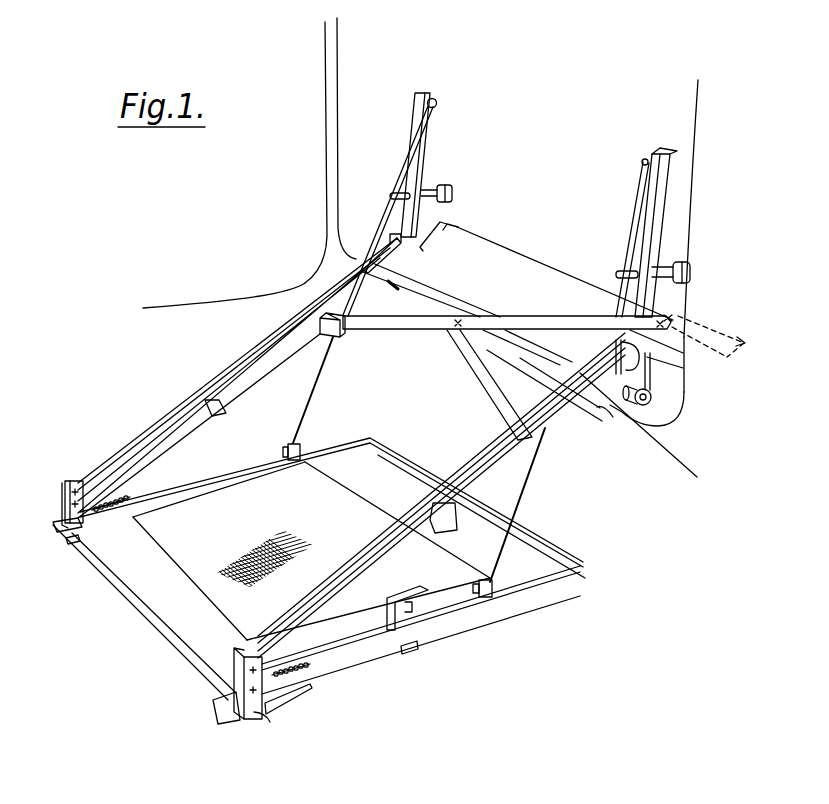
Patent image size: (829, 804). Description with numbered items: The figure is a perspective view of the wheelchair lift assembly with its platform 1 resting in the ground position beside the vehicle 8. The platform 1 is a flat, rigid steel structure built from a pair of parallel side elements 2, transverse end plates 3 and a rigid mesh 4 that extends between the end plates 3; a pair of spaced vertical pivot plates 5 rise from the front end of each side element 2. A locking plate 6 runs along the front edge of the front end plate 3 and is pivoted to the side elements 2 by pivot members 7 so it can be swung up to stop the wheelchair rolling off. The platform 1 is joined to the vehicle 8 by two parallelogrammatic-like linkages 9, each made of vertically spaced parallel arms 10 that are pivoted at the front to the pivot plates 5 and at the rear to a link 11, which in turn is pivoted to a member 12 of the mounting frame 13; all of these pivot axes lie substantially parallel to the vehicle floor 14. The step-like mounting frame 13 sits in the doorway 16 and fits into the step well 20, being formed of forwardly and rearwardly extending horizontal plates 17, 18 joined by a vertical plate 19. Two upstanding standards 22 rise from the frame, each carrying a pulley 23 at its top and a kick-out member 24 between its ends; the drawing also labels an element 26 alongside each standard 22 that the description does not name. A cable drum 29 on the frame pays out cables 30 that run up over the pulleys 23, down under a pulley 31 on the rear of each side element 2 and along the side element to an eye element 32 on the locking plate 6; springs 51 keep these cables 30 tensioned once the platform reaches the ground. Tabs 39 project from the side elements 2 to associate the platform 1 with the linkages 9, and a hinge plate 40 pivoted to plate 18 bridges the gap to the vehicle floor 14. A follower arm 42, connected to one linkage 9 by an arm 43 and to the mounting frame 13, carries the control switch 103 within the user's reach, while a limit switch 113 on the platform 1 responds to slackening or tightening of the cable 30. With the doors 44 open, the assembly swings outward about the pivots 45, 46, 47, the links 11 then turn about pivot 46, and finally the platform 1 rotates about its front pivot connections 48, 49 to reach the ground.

The platform 1 is at (226, 533).
The side elements 2 is at (258, 476).
The end plates 3 is at (178, 597).
The rigid mesh 4 is at (290, 540).
The pivot plates 5 is at (62, 505).
The locking plate 6 is at (125, 598).
The pivot members 7 is at (72, 544).
The vehicle 8 is at (750, 197).
The linkages 9 is at (230, 364).
The arms 10 is at (212, 411).
The link 11 is at (678, 401).
The member 12 is at (684, 323).
The mounting frame 13 is at (537, 260).
The vehicle floor 14 is at (360, 250).
The doorway 16 is at (362, 64).
The forwardly extending horizontal plate 17 is at (608, 414).
The rearwardly extending horizontal plate 18 is at (726, 357).
The vertical plate 19 is at (682, 394).
The step well 20 is at (660, 446).
The standards 22 is at (430, 132).
The pulley 23 is at (437, 104).
The kick-out member 24 is at (452, 193).
The cable / tie rod 26 is at (398, 176).
The cable drum 29 is at (556, 355).
The cables 30 is at (320, 383).
The pulley 31 is at (288, 447).
The eye element 32 is at (66, 542).
The tabs 39 is at (410, 651).
The hinge plate 40 is at (440, 275).
The follower arm 42 is at (415, 326).
The arm 43 is at (484, 377).
The doors 44 is at (227, 233).
The pivot 45 is at (600, 412).
The pivot 46 is at (688, 380).
The pivot 47 is at (672, 316).
The front pivot connection 48 is at (282, 702).
The front pivot connection 49 is at (262, 719).
The springs 51 is at (118, 498).
The control switch 103 is at (331, 339).
The limit switch 113 is at (420, 604).